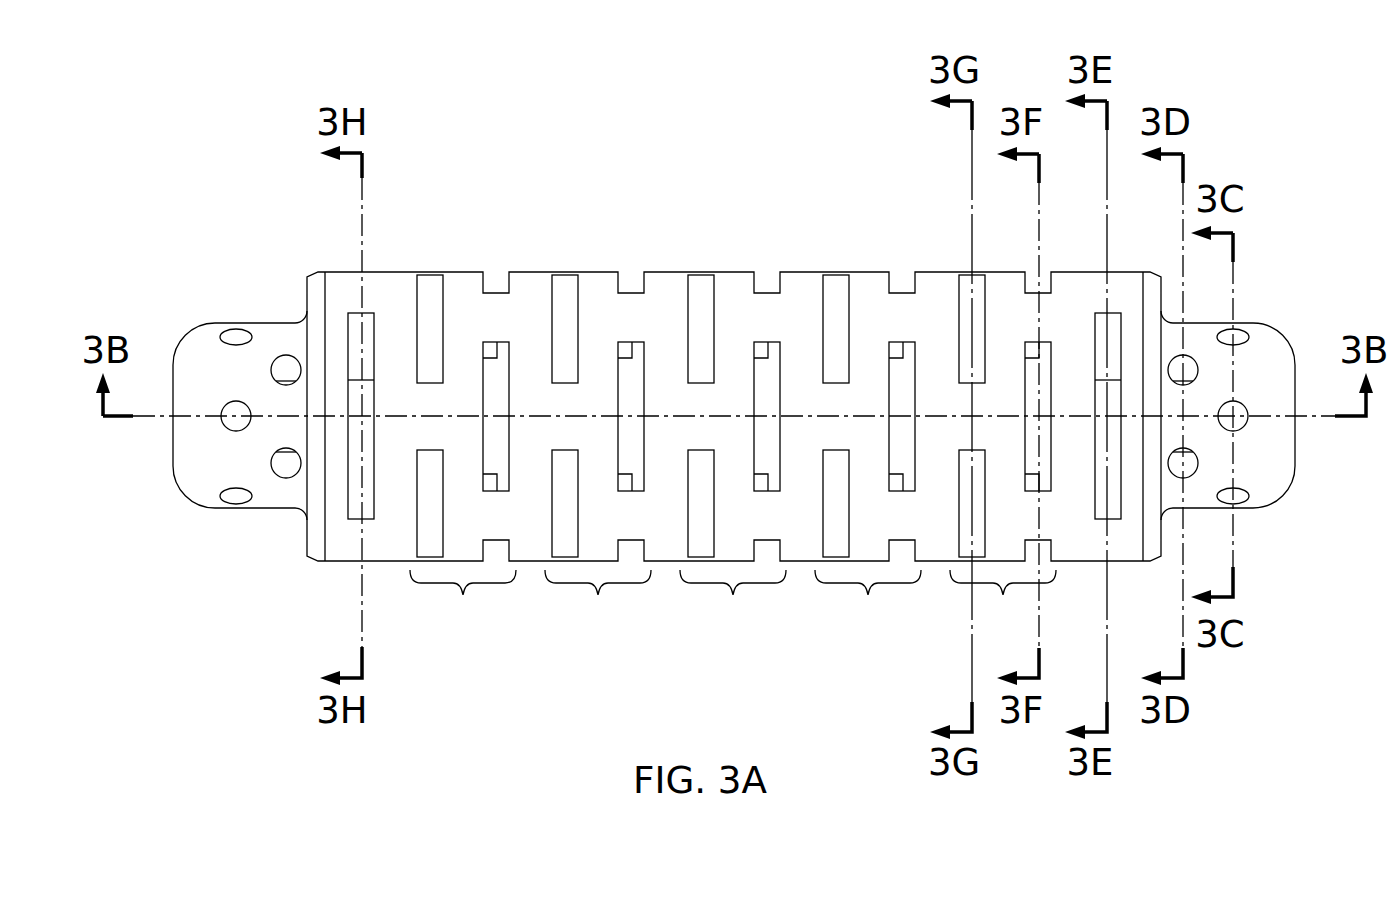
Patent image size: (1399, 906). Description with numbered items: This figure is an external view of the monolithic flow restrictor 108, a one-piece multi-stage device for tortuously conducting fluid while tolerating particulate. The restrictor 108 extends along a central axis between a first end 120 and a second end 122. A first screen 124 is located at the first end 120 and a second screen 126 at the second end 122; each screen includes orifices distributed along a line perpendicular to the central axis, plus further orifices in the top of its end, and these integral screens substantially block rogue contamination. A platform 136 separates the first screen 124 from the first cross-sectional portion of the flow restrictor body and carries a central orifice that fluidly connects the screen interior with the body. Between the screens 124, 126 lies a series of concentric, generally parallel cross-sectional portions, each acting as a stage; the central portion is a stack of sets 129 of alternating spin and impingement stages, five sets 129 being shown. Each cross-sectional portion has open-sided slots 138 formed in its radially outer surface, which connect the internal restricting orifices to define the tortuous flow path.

The monolithic flow restrictor 108 is at (640, 177).
The first end 120 is at (1277, 332).
The second end 122 is at (215, 323).
The first screen 124 is at (1275, 437).
The second screen 126 is at (195, 455).
The set of alternating spin and impingement cross-sectional portions 129 is at (733, 600).
The platform 136 is at (320, 272).
The open-sided slots 138 is at (502, 347).